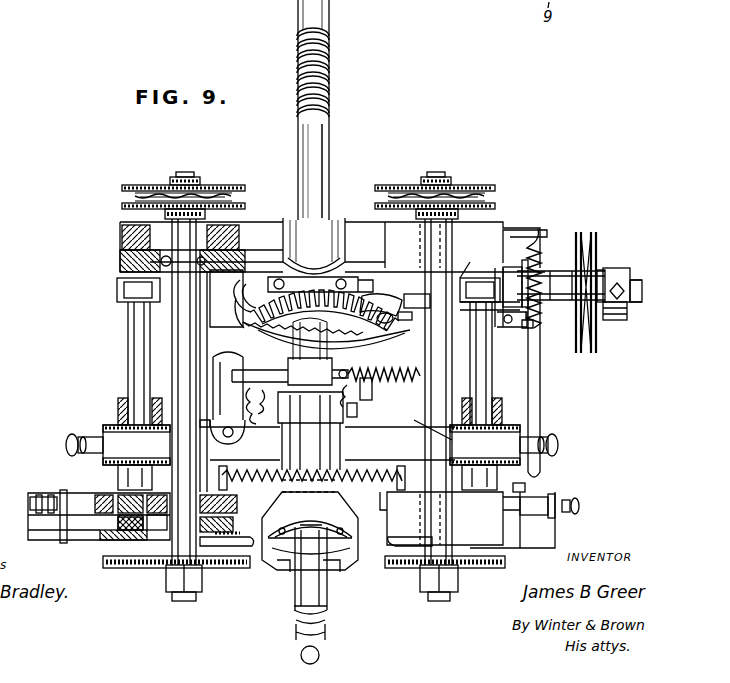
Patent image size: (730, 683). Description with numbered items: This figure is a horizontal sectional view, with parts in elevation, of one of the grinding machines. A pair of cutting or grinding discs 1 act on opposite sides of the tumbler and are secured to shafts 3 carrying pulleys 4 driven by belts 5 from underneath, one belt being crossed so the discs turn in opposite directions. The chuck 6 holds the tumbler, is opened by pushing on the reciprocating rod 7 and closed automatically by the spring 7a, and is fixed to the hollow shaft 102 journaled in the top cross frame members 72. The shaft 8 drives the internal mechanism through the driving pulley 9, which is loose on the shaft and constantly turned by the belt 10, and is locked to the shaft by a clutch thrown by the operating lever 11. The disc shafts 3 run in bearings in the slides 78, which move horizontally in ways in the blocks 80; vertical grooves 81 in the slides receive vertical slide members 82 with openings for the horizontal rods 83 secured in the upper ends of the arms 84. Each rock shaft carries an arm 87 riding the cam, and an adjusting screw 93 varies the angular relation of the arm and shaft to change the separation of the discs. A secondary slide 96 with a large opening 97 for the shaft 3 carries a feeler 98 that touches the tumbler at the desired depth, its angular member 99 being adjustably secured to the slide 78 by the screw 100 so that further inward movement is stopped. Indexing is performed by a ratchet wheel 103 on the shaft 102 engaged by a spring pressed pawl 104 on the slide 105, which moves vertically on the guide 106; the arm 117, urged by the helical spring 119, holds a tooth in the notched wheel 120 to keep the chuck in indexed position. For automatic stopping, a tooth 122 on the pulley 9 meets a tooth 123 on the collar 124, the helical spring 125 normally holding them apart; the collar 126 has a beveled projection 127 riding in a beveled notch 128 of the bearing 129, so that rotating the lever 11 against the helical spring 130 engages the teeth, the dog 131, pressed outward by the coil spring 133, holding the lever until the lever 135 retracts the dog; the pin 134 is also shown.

The cutting or grinding discs 1 is at (231, 569).
The shafts 3 is at (172, 367).
The pulleys 4 is at (216, 187).
The belts 5 is at (122, 197).
The chuck 6 is at (294, 567).
The reciprocating rod 7 is at (330, 14).
The spring 7a is at (330, 76).
The shaft 8 is at (634, 283).
The driving pulley 9 is at (597, 252).
The belt 10 is at (586, 232).
The operating lever 11 is at (540, 375).
The top cross frame members 72 is at (332, 364).
The slides 78 is at (121, 264).
The blocks 80 is at (232, 228).
The vertical grooves 81 is at (123, 280).
The vertical slide members 82 is at (121, 236).
The horizontal rods 83 is at (127, 351).
The arms 84 is at (122, 293).
The arm 87 is at (100, 483).
The adjusting screw 93 is at (74, 436).
The secondary slide 96 is at (118, 540).
The opening 97 is at (137, 530).
The feeler 98 is at (250, 536).
The angular member 99 is at (60, 546).
The screw 100 is at (48, 494).
The hollow shaft 102 is at (322, 342).
The ratchet wheel 103 is at (324, 312).
The spring pressed pawl 104 is at (257, 332).
The slide 105 is at (227, 327).
The guide 106 is at (249, 268).
The arm 117 is at (274, 398).
The helical spring 119 is at (379, 363).
The notched wheel 120 is at (368, 396).
The tooth 122 is at (640, 272).
The tooth 123 is at (610, 320).
The collar 124 is at (634, 312).
The helical spring 125 is at (609, 290).
The collar 126 is at (543, 276).
The beveled projection 127 is at (517, 276).
The beveled notch 128 is at (487, 315).
The bearing 129 is at (503, 254).
The helical spring 130 is at (540, 244).
The dog 131 is at (531, 327).
The coil spring 133 is at (508, 327).
The pin 134 is at (406, 330).
The lever 135 is at (375, 320).